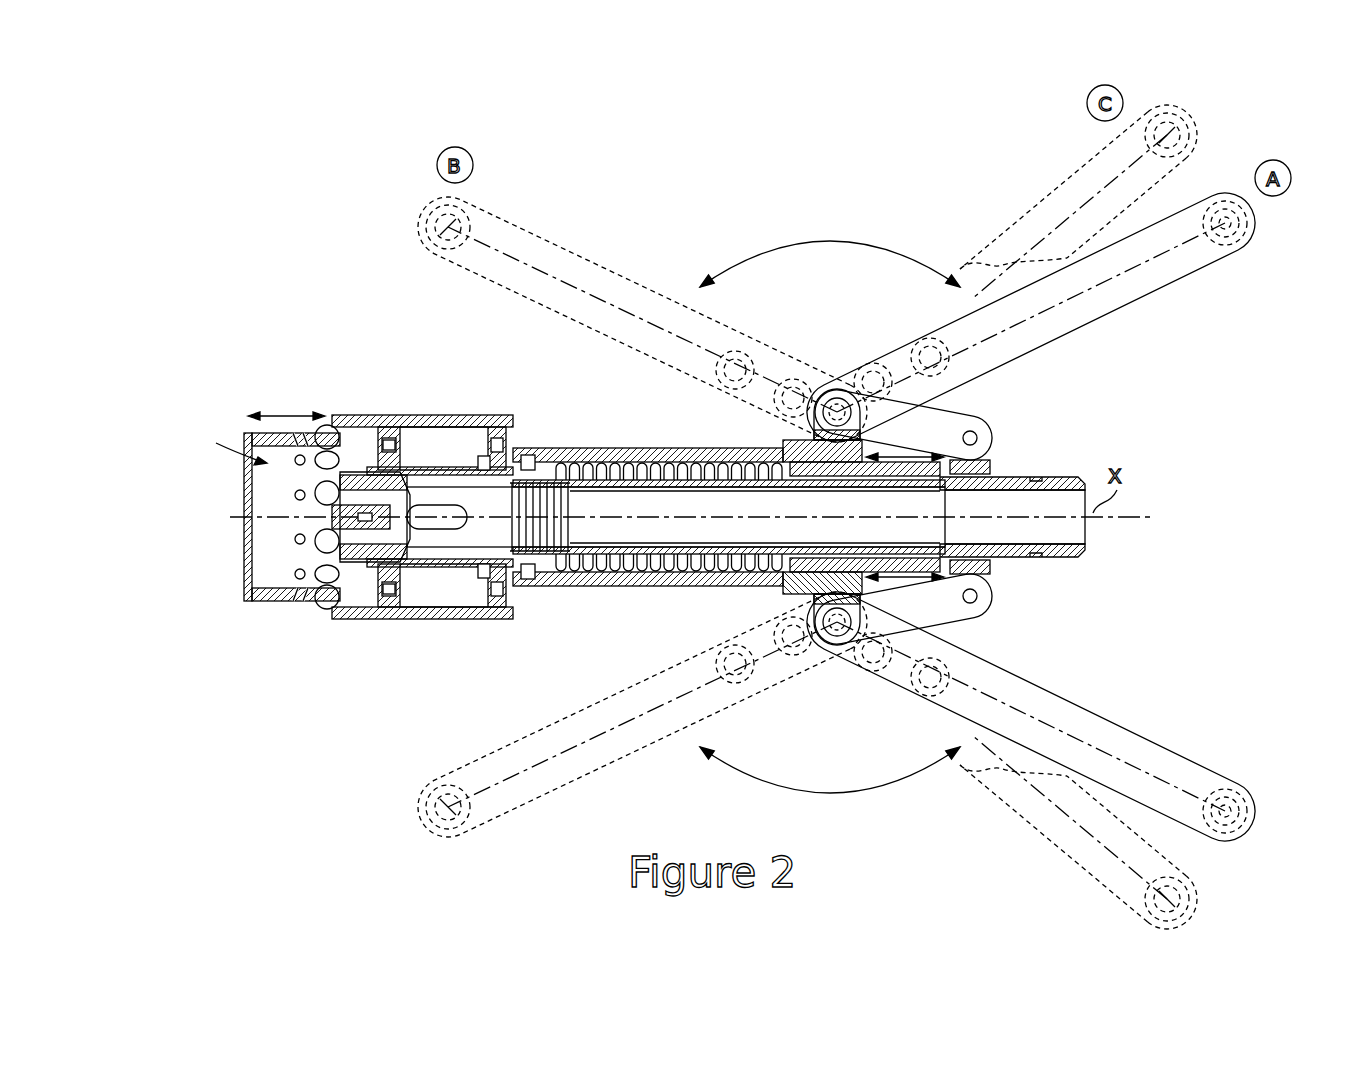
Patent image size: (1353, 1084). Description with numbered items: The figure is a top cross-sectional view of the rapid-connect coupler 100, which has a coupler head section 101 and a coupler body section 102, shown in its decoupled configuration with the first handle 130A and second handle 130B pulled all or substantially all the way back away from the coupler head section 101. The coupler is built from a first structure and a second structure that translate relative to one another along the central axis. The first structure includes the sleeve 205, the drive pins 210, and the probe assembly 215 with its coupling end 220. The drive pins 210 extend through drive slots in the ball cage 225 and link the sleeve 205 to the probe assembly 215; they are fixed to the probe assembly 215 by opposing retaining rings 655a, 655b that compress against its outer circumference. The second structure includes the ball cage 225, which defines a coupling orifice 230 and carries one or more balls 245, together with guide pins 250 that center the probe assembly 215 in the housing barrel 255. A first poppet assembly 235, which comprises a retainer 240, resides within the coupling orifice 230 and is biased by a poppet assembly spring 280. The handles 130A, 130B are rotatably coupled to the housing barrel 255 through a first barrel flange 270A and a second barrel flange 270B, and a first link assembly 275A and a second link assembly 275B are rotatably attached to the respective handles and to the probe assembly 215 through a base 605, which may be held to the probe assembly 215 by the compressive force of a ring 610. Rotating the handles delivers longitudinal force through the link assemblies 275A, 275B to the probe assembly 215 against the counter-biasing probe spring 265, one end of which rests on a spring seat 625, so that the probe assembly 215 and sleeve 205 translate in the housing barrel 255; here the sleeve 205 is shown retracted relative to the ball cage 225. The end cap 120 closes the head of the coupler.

The rapid-connect coupler 100 is at (323, 162).
The coupler head section 101 is at (288, 377).
The coupler body section 102 is at (574, 357).
The end cap 120 is at (247, 601).
The first handle 130A is at (1150, 300).
The second handle 130B is at (1142, 735).
The sleeve 205 is at (383, 415).
The drive pins 210 is at (499, 415).
The probe assembly 215 is at (662, 503).
The coupling end 220 is at (1075, 477).
The ball cage 225 is at (268, 606).
The coupling orifice 230 is at (223, 440).
The first poppet assembly 235 is at (313, 528).
The retainer 240 is at (340, 478).
The balls 245 is at (327, 602).
The guide pins 250 is at (383, 600).
The housing barrel 255 is at (665, 596).
The probe spring 265 is at (625, 574).
The first barrel flange 270A is at (785, 441).
The second barrel flange 270B is at (785, 590).
The first link assembly 275A is at (987, 430).
The second link assembly 275B is at (990, 598).
The poppet assembly spring 280 is at (568, 497).
The base 605 is at (996, 462).
The ring 610 is at (1012, 558).
The spring seat 625 is at (800, 567).
The retaining ring 655a is at (483, 572).
The retaining ring 655b is at (507, 582).